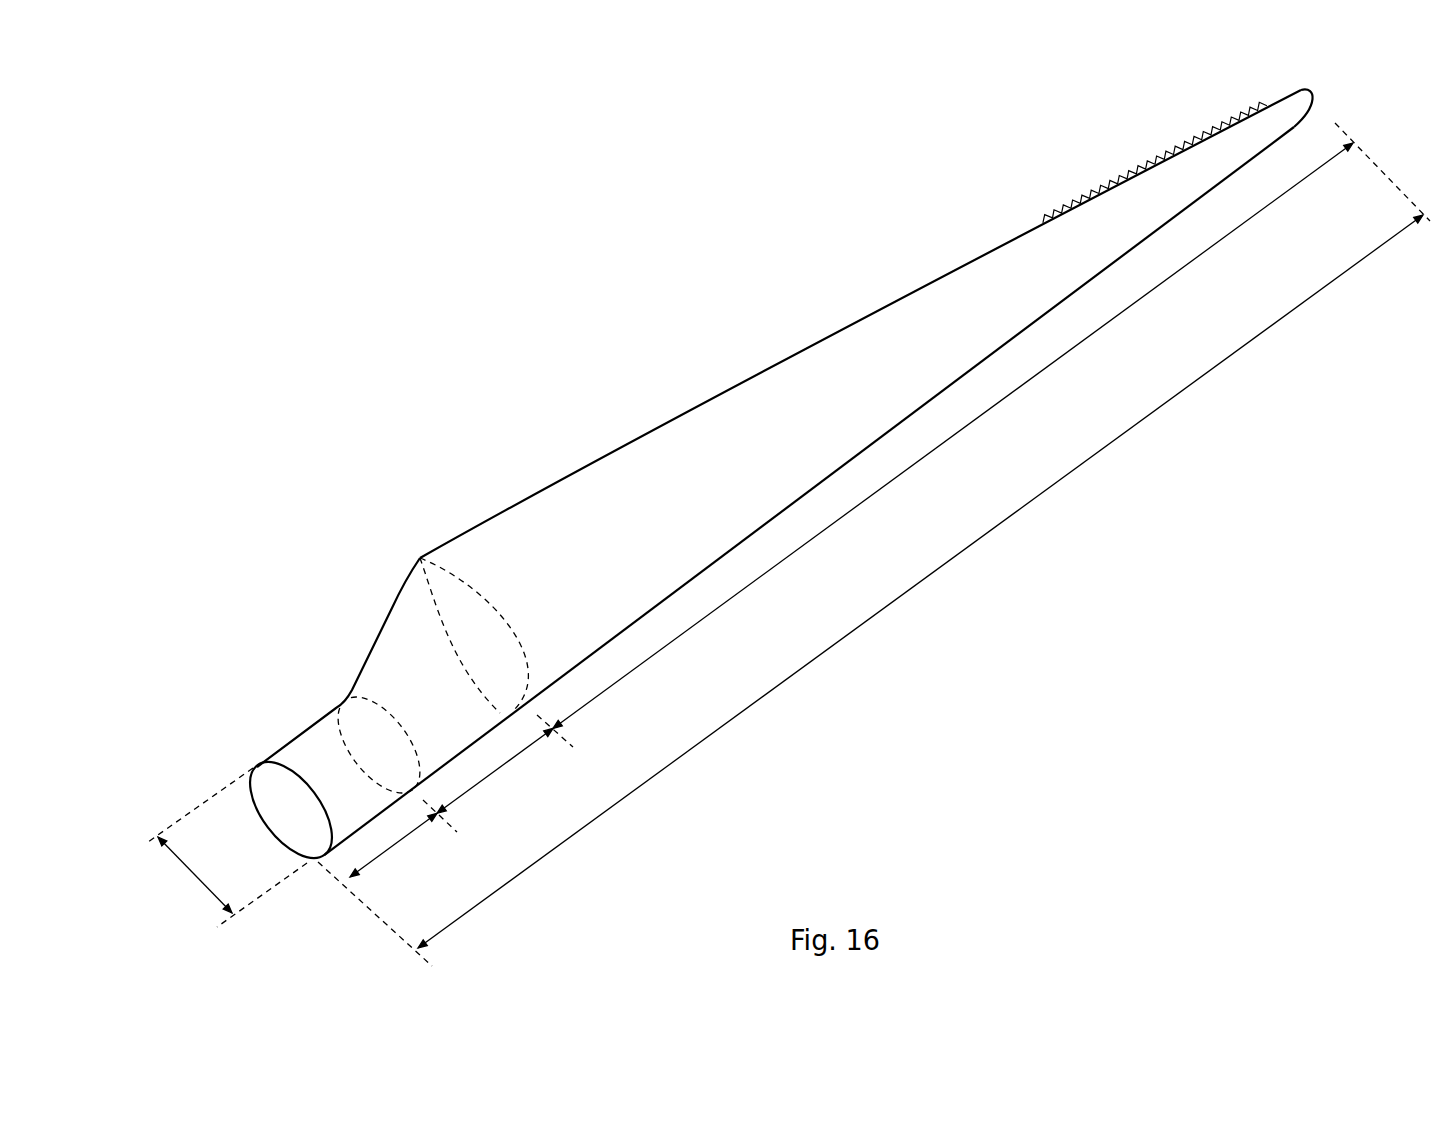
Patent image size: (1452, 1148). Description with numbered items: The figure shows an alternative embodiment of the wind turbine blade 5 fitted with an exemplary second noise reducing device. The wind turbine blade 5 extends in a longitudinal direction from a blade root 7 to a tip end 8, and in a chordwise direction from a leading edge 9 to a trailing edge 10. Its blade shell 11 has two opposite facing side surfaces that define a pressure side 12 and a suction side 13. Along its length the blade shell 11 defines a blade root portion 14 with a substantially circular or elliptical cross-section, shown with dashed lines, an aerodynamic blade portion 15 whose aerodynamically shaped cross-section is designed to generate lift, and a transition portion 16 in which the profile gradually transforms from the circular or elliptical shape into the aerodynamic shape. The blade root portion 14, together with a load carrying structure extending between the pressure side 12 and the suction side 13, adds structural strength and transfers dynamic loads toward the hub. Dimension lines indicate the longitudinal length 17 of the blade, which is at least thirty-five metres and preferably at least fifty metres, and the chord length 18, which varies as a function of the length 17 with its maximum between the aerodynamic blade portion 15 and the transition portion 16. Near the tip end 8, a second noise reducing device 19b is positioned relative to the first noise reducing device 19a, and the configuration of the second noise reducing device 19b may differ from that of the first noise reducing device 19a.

The wind turbine blade 5 is at (760, 457).
The blade root 7 is at (290, 822).
The tip end 8 is at (1307, 90).
The leading edge 9 is at (990, 357).
The trailing edge 10 is at (998, 248).
The blade shell 11 is at (762, 393).
The pressure side 12 is at (443, 613).
The suction side 13 is at (871, 386).
The blade root portion 14 is at (397, 843).
The aerodynamic blade portion 15 is at (873, 497).
The transition portion 16 is at (497, 773).
The longitudinal length 17 is at (835, 647).
The chord length 18 is at (203, 883).
The first noise reducing device 19a is at (1193, 116).
The second noise reducing device 19b is at (1062, 180).